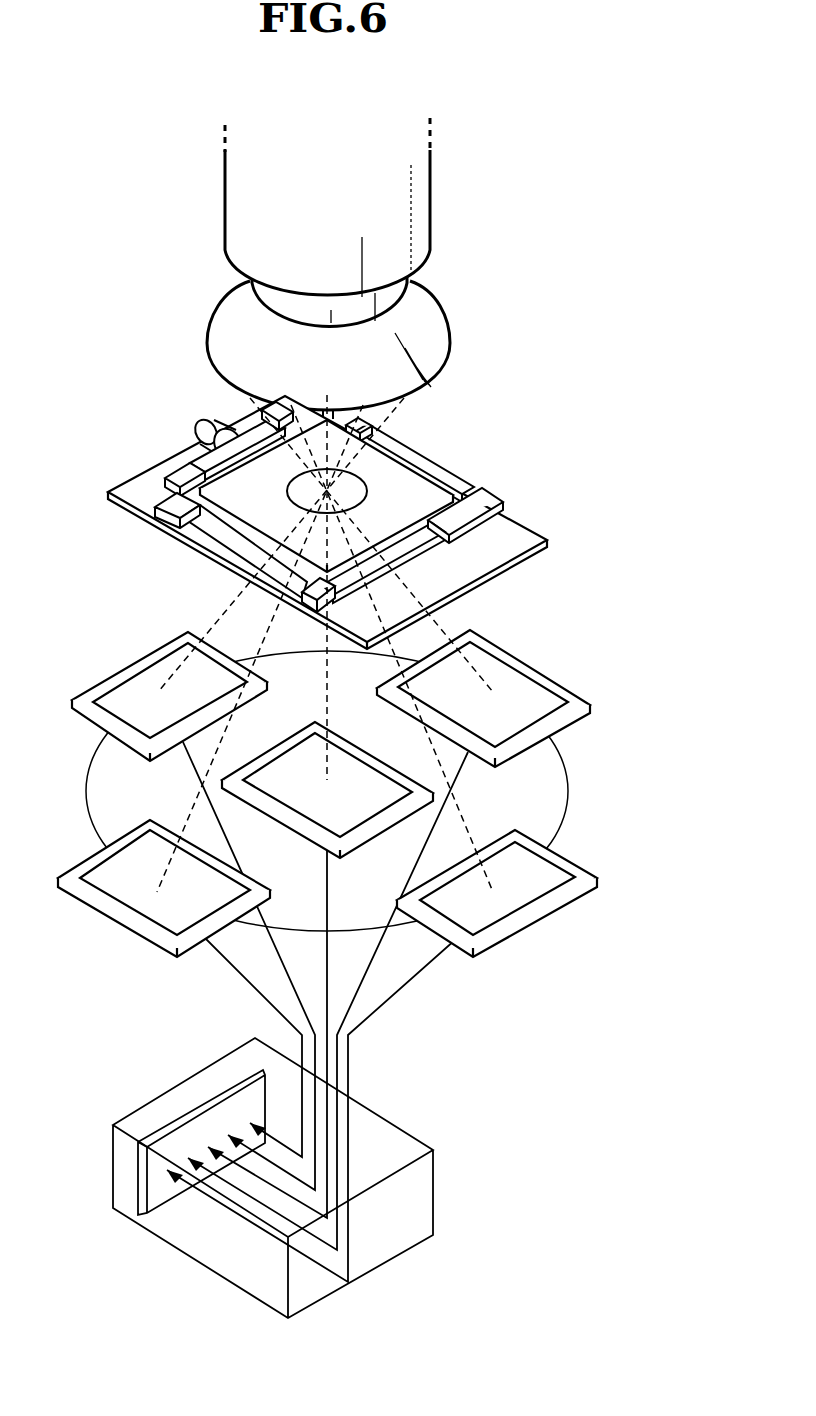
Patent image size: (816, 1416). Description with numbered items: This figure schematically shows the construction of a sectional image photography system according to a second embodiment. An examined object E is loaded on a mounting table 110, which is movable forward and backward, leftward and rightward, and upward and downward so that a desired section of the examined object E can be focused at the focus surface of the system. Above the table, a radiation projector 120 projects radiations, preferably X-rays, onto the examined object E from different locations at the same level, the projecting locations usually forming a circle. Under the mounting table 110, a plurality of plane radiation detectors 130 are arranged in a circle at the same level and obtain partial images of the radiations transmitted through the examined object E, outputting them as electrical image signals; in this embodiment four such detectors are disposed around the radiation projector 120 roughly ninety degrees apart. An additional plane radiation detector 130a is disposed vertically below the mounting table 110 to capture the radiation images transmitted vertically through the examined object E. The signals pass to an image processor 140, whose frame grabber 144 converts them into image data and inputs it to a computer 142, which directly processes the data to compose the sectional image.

The radiation projector 120 is at (430, 203).
The mounting table 110 is at (502, 548).
The examined object E is at (406, 487).
The plane radiation detectors 130 is at (128, 668).
The additional plane radiation detector 130a is at (412, 787).
The image processor 140 is at (260, 1030).
The computer 142 is at (115, 1193).
The frame grabber 144 is at (192, 1119).